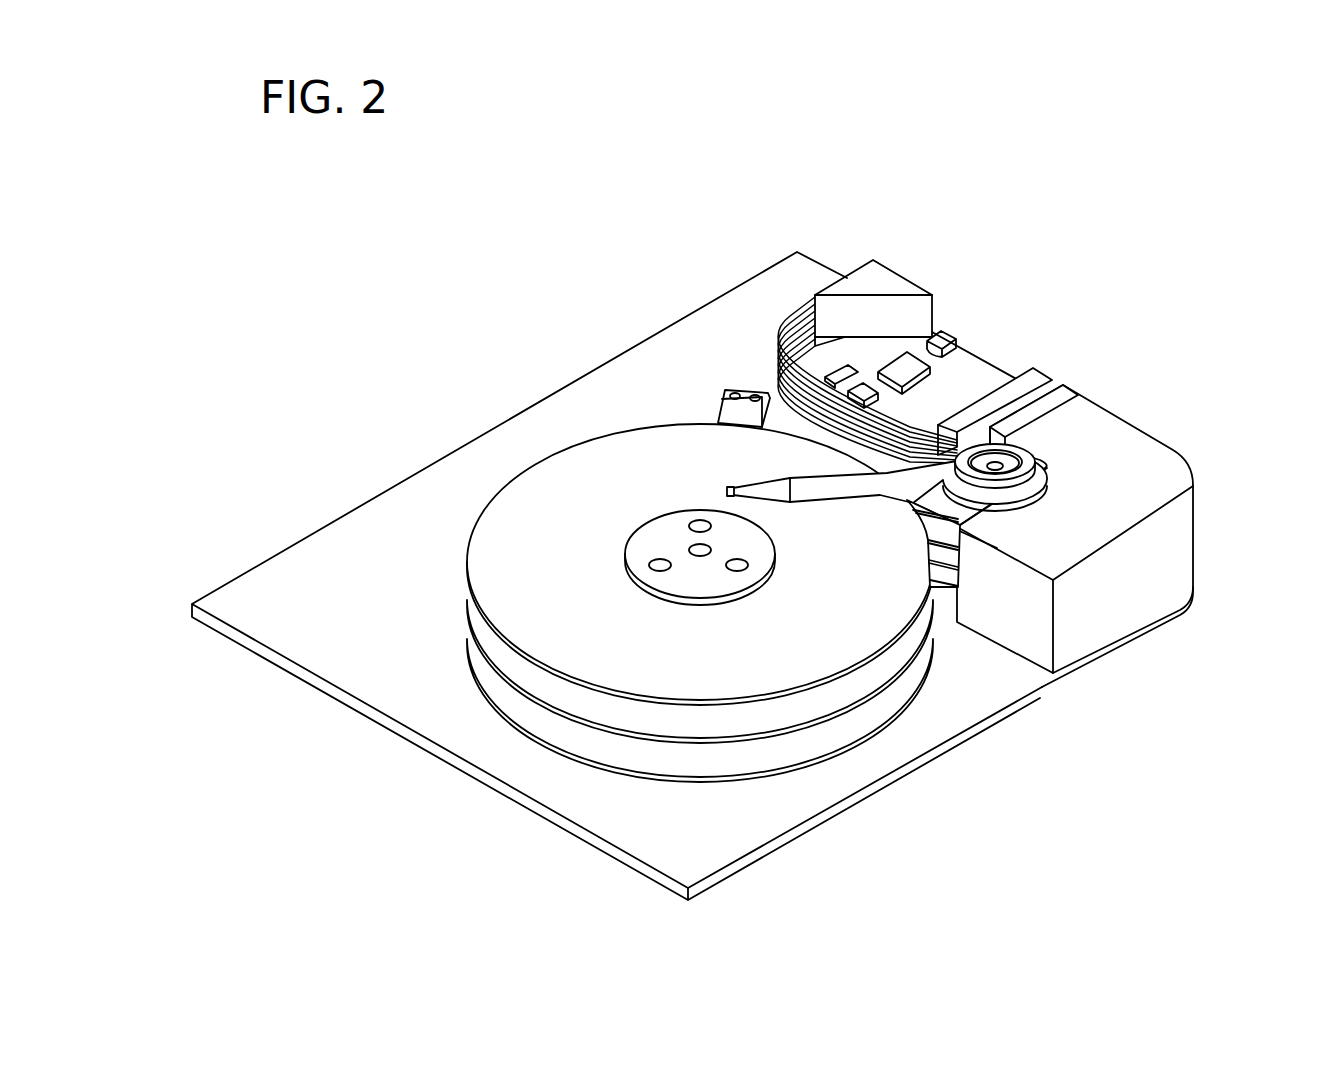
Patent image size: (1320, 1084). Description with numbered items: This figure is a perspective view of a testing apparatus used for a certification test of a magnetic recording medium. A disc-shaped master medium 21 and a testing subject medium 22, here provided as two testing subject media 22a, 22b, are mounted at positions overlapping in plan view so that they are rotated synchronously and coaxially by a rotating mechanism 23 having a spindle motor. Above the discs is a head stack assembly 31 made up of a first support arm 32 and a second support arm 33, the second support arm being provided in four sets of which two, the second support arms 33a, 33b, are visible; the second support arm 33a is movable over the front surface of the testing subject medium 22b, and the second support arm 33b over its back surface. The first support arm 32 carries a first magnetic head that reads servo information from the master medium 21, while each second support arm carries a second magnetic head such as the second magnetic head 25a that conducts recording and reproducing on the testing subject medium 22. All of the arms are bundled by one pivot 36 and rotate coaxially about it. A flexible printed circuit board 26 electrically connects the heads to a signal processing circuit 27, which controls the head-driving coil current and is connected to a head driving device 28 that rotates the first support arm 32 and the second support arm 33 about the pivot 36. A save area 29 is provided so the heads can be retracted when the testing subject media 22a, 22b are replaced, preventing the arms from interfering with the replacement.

The master medium 21 is at (780, 770).
The testing subject medium 22 is at (714, 673).
The testing subject medium 22a is at (838, 710).
The testing subject medium 22b is at (867, 657).
The rotating mechanism 23 is at (680, 520).
The second magnetic head 25a is at (727, 487).
The flexible printed circuit board 26 is at (798, 320).
The signal processing circuit 27 is at (962, 376).
The head driving device 28 is at (1100, 450).
The save area 29 is at (745, 390).
The head stack assembly 31 is at (895, 478).
The first support arm 32 is at (947, 572).
The second support arm 33 is at (1065, 567).
The second support arm 33a is at (905, 488).
The second support arm 33b is at (927, 510).
The pivot 36 is at (996, 464).